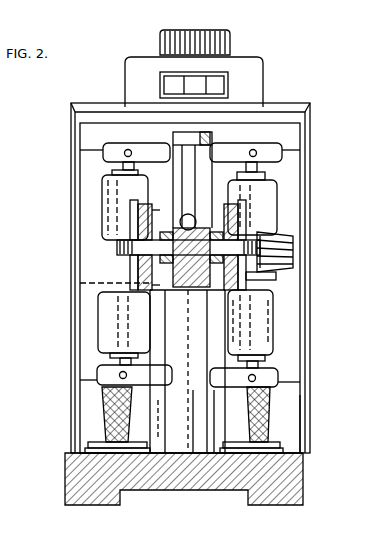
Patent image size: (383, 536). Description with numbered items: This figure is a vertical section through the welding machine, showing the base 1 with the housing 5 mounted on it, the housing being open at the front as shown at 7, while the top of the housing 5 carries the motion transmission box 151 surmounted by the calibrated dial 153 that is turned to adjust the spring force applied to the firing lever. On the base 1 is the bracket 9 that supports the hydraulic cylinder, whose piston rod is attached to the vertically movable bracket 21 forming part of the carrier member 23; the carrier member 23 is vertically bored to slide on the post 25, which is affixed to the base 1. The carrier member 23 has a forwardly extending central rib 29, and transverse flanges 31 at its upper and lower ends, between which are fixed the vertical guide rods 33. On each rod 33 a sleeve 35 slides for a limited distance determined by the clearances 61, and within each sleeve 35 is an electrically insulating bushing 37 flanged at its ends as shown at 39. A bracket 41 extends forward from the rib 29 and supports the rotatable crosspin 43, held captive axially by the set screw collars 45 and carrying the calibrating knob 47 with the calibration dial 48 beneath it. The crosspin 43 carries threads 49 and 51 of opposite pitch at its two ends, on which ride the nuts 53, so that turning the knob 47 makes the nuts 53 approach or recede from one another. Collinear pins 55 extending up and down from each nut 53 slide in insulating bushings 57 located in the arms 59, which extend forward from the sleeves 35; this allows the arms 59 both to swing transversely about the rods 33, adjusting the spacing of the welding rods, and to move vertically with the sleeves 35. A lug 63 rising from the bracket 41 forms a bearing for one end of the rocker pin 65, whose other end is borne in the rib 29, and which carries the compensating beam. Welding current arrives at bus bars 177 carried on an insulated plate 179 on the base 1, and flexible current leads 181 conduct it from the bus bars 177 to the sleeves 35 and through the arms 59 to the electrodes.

The base 1 is at (290, 480).
The housing 5 is at (71, 347).
The front opening 7 is at (290, 417).
The bracket 9 is at (157, 412).
The vertically movable bracket 21 is at (214, 412).
The carrier member 23 is at (192, 408).
The post 25 is at (177, 137).
The central rib 29 is at (243, 322).
The transverse flanges 31 is at (103, 150).
The fixed vertical rods 33 is at (120, 142).
The sleeve 35 is at (102, 200).
The electrically insulating bushing 37 is at (80, 283).
The bushing flanges 39 is at (123, 168).
The bracket 41 is at (191, 269).
The rotatable crosspin 43 is at (190, 214).
The set screw collars 45 is at (187, 271).
The calibrating knob 47 is at (294, 250).
The calibration dial 48 is at (276, 288).
The thread 49 is at (117, 248).
The thread 51 is at (290, 262).
The nuts 53 is at (138, 230).
The collinear pins 55 is at (130, 212).
The insulating bushings 57 is at (104, 186).
The arms 59 is at (188, 265).
The clearances 61 is at (112, 165).
The lug 63 is at (195, 186).
The rocker pin 65 is at (192, 185).
The motion transmission box 151 is at (147, 62).
The calibrated dial 153 is at (224, 45).
The bus bars 177 is at (90, 445).
The insulated plate 179 is at (85, 450).
The flexible current leads 181 is at (104, 400).